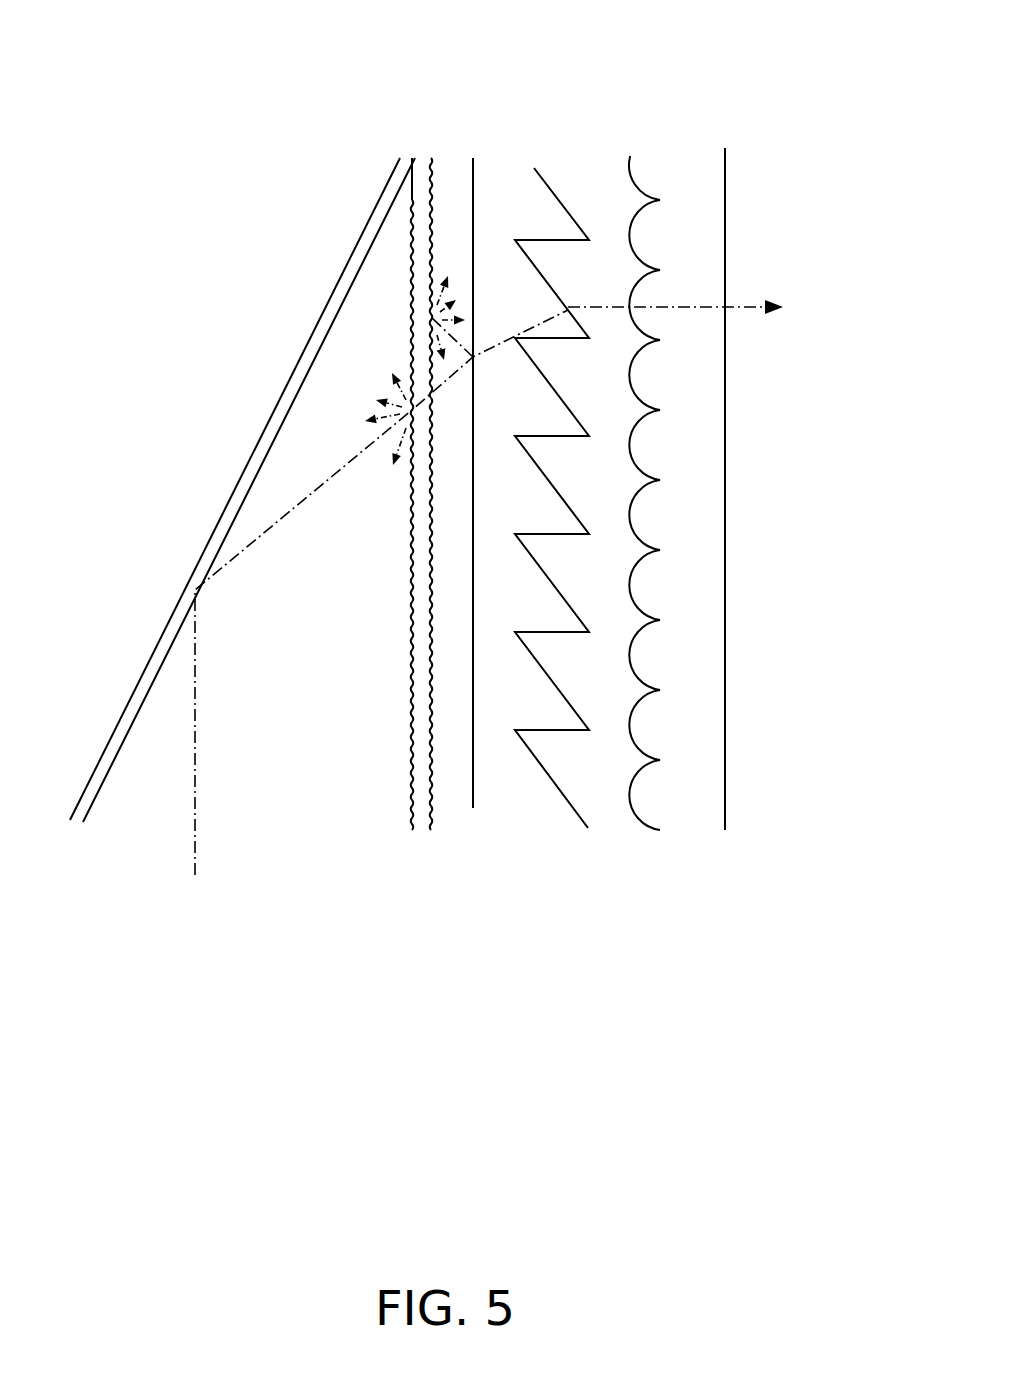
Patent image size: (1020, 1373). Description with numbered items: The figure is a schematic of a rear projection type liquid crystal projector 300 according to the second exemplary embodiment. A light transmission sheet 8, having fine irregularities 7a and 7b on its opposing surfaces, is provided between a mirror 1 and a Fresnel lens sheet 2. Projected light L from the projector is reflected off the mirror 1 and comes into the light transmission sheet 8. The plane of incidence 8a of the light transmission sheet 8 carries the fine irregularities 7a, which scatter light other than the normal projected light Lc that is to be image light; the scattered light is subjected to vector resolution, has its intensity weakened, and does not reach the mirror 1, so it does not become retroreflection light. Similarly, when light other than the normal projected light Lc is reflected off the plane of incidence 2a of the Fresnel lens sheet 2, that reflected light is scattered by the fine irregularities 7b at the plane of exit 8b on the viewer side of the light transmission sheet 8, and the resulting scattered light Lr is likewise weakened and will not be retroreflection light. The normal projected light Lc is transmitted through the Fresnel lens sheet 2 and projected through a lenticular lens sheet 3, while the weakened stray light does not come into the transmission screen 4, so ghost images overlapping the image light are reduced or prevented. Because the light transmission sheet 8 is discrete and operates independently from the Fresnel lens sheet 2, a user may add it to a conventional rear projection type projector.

The rear projection type projector 300 is at (787, 140).
The mirror 1 is at (338, 278).
The Fresnel lens sheet 2 is at (530, 462).
The plane of incidence of the Fresnel lens sheet 2a is at (472, 763).
The lenticular lens sheet 3 is at (678, 165).
The transmission screen 4 is at (730, 56).
The fine irregularities 7a is at (412, 650).
The fine irregularities 7b is at (432, 763).
The light transmission sheet 8 is at (390, 532).
The plane of incidence 8a is at (363, 494).
The plane of exit 8b is at (447, 513).
The projected light L is at (195, 792).
The scattered light Lr is at (467, 298).
The normal projected light Lc is at (752, 300).